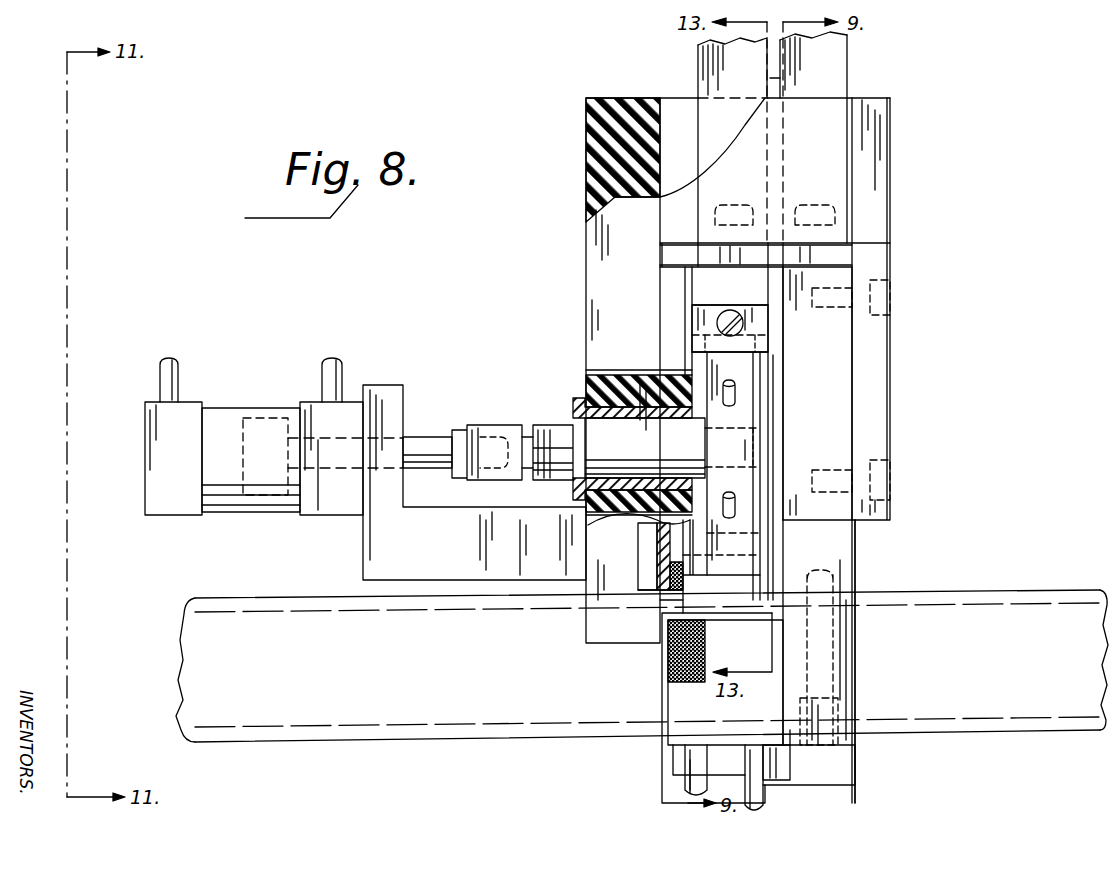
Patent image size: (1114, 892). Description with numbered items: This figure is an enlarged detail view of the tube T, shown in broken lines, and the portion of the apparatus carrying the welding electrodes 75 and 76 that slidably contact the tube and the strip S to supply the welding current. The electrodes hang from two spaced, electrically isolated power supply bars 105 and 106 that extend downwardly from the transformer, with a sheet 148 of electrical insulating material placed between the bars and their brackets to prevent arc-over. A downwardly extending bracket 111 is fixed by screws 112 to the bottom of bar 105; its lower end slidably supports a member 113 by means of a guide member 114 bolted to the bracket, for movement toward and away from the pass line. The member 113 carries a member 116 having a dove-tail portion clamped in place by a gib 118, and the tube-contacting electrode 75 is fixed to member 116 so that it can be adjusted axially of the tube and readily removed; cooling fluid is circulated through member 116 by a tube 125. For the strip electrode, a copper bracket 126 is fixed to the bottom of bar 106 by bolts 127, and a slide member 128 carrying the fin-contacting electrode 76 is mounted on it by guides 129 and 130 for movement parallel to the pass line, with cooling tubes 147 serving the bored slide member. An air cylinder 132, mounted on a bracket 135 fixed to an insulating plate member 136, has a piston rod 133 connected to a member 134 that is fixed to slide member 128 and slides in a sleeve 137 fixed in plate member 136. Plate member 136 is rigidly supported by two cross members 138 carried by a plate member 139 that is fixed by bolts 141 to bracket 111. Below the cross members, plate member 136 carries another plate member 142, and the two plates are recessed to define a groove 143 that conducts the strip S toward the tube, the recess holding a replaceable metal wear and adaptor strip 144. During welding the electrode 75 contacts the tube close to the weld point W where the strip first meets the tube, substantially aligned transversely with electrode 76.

The tube T is at (1031, 588).
The cross members 138 is at (615, 133).
The power supply bar 106 is at (705, 71).
The power supply bar 105 is at (850, 48).
The sheet of electrical insulating material 148 is at (776, 78).
The screws 112 is at (855, 216).
The bolts 127 is at (758, 194).
The plate member 136 is at (586, 249).
The bracket 126 is at (702, 288).
The plate member 142 is at (670, 311).
The guide 129 is at (765, 322).
The slide member 128 is at (750, 407).
The cooling tubes 147 is at (736, 393).
The guide 130 is at (770, 546).
The bracket 111 is at (815, 382).
The plate member 139 is at (892, 419).
The bolts 141 is at (890, 318).
The member 134 is at (588, 440).
The sleeve 137 is at (657, 420).
The air cylinder 132 is at (275, 408).
The piston rod 133 is at (413, 440).
The bracket 135 is at (373, 556).
The groove 143 is at (640, 545).
The metal strip 144 is at (657, 563).
The strip S is at (668, 590).
The weld point W is at (672, 597).
The welding electrode 76 is at (683, 582).
The welding electrode 75 is at (672, 672).
The slide member 113 is at (660, 710).
The member 116 is at (690, 709).
The guide member 114 is at (856, 742).
The tube 125 is at (690, 765).
The gib 118 is at (782, 770).